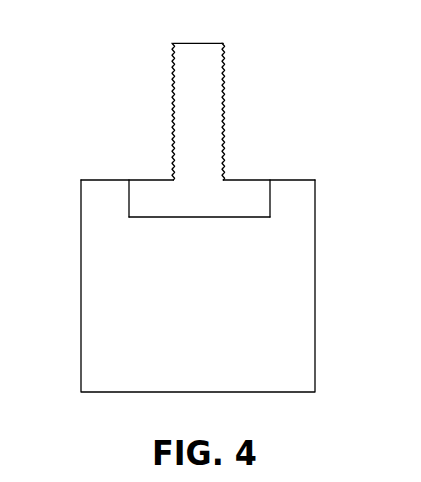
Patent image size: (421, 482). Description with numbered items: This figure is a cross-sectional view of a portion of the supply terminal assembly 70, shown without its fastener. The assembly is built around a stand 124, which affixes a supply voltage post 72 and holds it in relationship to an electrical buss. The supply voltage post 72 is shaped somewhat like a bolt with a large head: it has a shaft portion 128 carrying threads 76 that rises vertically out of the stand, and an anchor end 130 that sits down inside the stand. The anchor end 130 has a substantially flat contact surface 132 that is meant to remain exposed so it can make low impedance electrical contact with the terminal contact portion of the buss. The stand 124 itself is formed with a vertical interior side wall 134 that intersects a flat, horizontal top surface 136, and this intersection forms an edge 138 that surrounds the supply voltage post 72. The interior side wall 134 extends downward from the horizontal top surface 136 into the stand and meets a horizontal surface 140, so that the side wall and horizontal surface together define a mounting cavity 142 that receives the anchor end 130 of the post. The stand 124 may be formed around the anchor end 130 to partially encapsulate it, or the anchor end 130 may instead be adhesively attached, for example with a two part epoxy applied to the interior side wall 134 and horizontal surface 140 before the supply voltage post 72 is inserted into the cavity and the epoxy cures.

The supply terminal assembly 70 is at (124, 70).
The supply voltage post 72 is at (152, 117).
The threads 76 is at (171, 167).
The shaft portion 128 is at (200, 67).
The flat contact surface 132 is at (230, 178).
The interior side wall 134 is at (268, 202).
The edge 138 is at (267, 177).
The horizontal top surface 136 is at (288, 178).
The anchor end 130 is at (222, 200).
The stand 124 is at (262, 300).
The horizontal surface 140 is at (185, 215).
The mounting cavity 142 is at (152, 186).